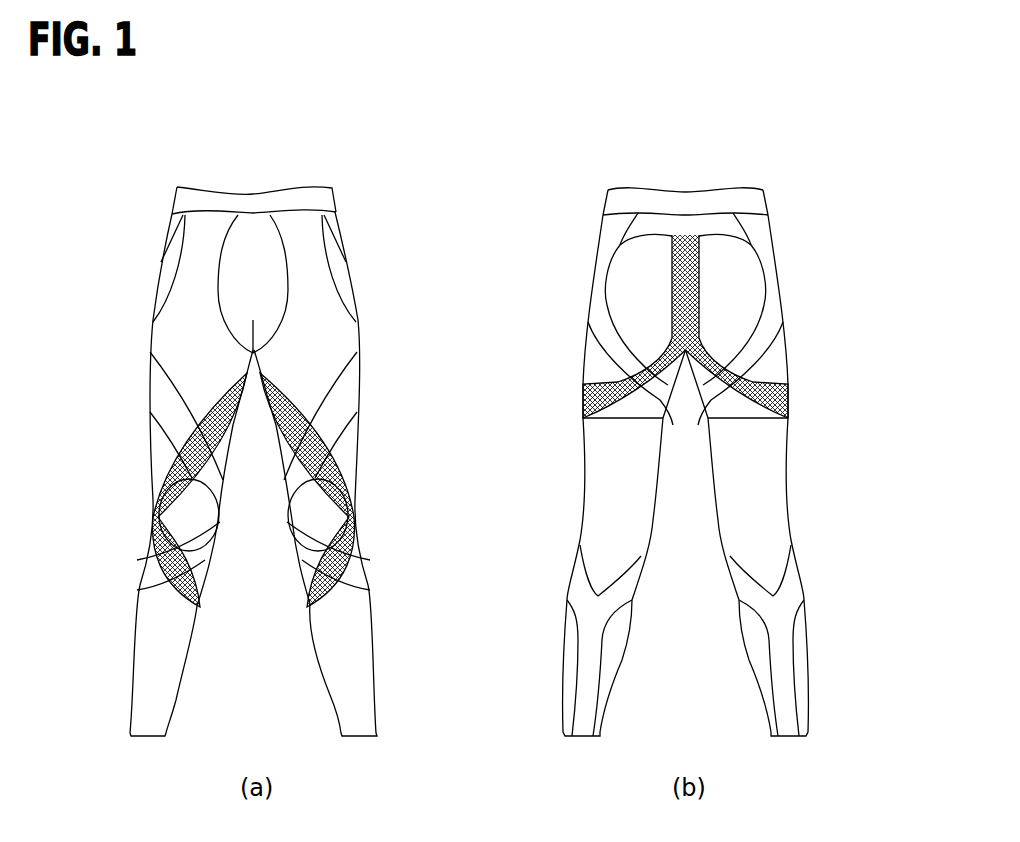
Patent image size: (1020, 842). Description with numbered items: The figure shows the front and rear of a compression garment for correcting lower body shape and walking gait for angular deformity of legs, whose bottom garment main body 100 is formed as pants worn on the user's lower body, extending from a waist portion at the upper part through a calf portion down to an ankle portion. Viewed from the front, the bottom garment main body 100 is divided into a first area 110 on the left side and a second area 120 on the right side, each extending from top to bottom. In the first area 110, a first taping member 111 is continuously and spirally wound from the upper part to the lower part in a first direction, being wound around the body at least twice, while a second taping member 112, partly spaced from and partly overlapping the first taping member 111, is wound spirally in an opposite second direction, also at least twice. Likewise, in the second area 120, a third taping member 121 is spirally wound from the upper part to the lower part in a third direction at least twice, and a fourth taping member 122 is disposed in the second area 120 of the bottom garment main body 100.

The bottom garment main body 100 is at (348, 220).
The first area 110 is at (170, 338).
The first taping member 111 is at (162, 478).
The second taping member 112 is at (162, 398).
The second area 120 is at (330, 325).
The third taping member 121 is at (340, 487).
The fourth taping member 122 is at (346, 405).